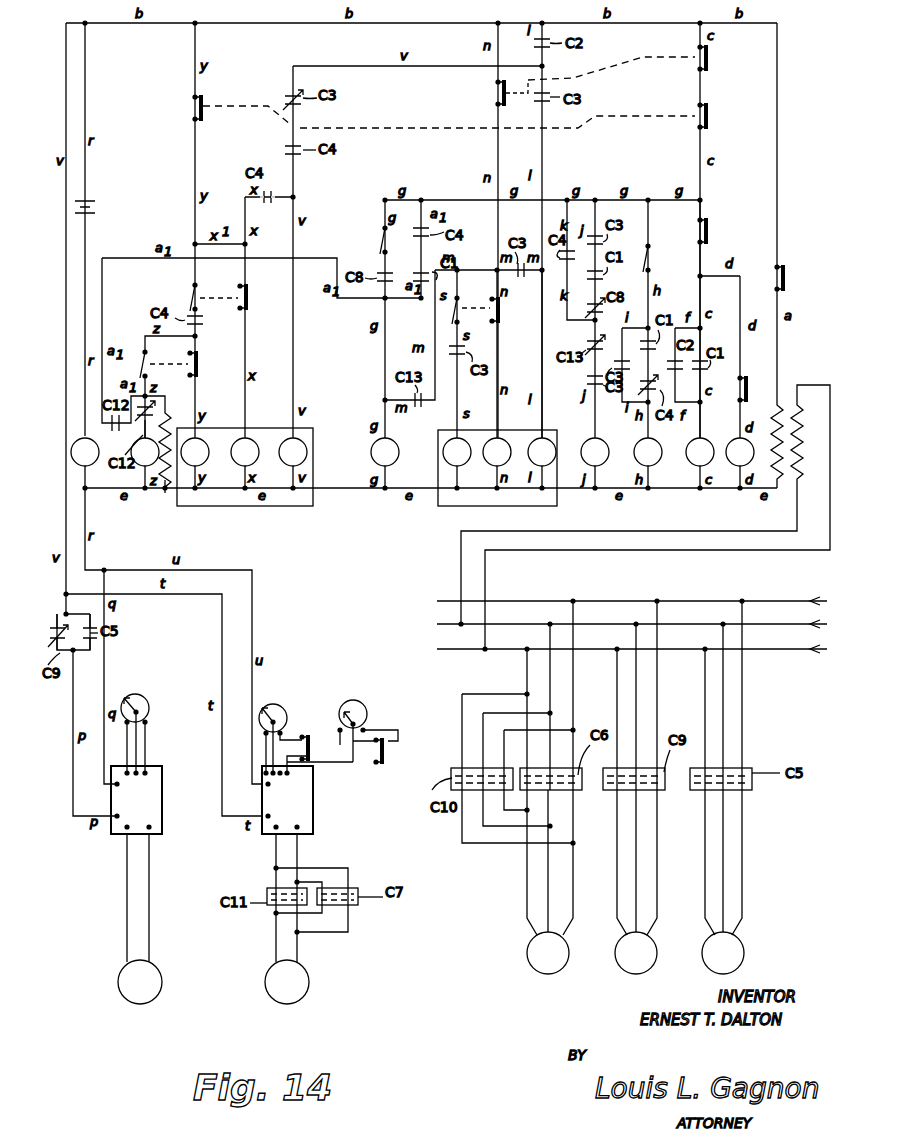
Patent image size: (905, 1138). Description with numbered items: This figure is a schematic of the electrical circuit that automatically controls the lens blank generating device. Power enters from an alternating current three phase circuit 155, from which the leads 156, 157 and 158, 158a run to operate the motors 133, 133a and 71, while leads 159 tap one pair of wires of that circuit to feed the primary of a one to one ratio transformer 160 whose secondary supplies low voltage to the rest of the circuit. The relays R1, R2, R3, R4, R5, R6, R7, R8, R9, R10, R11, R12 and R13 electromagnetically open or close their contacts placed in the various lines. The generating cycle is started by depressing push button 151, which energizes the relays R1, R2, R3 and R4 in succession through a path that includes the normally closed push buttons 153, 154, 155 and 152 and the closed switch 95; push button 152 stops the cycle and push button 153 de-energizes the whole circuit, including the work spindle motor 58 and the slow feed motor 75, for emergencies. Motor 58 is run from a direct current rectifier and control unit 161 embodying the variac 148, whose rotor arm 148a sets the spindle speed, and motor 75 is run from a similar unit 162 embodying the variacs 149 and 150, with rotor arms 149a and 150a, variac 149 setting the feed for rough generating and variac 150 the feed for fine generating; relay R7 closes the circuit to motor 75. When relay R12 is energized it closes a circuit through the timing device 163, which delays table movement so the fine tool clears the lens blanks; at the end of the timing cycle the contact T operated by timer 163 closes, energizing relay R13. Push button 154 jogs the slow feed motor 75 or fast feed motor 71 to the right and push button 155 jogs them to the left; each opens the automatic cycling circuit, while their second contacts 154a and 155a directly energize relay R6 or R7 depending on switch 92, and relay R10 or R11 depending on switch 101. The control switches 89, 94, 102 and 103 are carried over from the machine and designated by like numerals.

The contact T is at (95, 208).
The second contact 155a is at (203, 102).
The second contact portion 154a is at (495, 92).
The push button 154 is at (708, 62).
The push button 155 is at (708, 120).
The push button 152 is at (708, 232).
The push button 153 is at (783, 268).
The push button 151 is at (748, 382).
The control switch 89 is at (376, 250).
The control switch 92 is at (488, 298).
The control switch 95 is at (652, 256).
The control switch 101 is at (224, 284).
The control switch 103 is at (180, 354).
The timing device 163 is at (168, 410).
The transformer 160 is at (800, 440).
The leads 159 is at (590, 531).
The conductors 158a is at (510, 705).
The lead 158 is at (530, 672).
The lead 157 is at (620, 680).
The lead 156 is at (708, 697).
The movable rotor arm 148a is at (140, 690).
The variac 148 is at (147, 718).
The movable rotor arm 150a is at (284, 706).
The variac 150 is at (273, 702).
The control switch 102 is at (310, 745).
The variac 149 is at (360, 703).
The movable rotor arm 149a is at (410, 728).
The control switch 94 is at (388, 758).
The direct current rectifier and control unit 161 is at (155, 815).
The direct current rectifier and control unit 162 is at (306, 800).
The work spindle motor 58 is at (136, 1003).
The slow feed motor 75 is at (280, 1003).
The fast feed motor 71 is at (534, 963).
The motor 133a is at (624, 959).
The motor 133 is at (712, 964).
The relay R1 is at (740, 452).
The relay R2 is at (700, 452).
The relay R3 is at (648, 452).
The relay R4 is at (595, 452).
The relay R5 is at (542, 452).
The relay R6 is at (497, 452).
The relay R7 is at (457, 452).
The relay R8 is at (385, 452).
The relay R9 is at (293, 452).
The relay R10 is at (245, 452).
The relay R11 is at (195, 452).
The relay R12 is at (145, 452).
The relay R13 is at (85, 452).